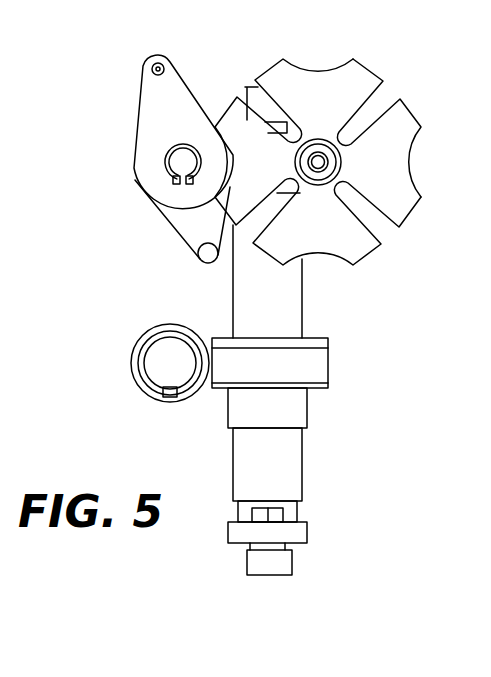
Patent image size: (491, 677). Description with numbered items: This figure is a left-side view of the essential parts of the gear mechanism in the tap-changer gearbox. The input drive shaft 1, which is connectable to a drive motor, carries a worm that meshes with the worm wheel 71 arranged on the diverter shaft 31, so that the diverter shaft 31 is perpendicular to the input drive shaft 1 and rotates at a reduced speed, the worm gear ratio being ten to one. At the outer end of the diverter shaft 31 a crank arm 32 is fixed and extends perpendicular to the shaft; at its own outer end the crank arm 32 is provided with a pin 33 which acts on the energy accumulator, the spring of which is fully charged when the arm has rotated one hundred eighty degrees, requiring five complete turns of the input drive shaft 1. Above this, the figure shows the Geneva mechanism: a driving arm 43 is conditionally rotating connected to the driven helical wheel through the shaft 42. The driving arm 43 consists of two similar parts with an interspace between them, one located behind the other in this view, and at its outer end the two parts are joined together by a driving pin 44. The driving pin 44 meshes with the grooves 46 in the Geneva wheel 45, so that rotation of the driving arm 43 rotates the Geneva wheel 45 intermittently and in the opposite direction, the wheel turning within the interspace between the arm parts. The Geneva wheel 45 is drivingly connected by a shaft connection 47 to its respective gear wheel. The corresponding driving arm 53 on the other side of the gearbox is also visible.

The input drive shaft 1 is at (180, 372).
The diverter shaft 31 is at (285, 303).
The crank arm 32 is at (297, 530).
The pin 33 is at (268, 563).
The shaft 42 is at (180, 160).
The driving arm 43 is at (160, 105).
The driving pin 44 is at (164, 66).
The Geneva wheel 45 is at (315, 88).
The grooves 46 is at (370, 97).
The shaft connection 47 is at (341, 166).
The driving arm 53 is at (183, 227).
The worm wheel 71 is at (307, 360).